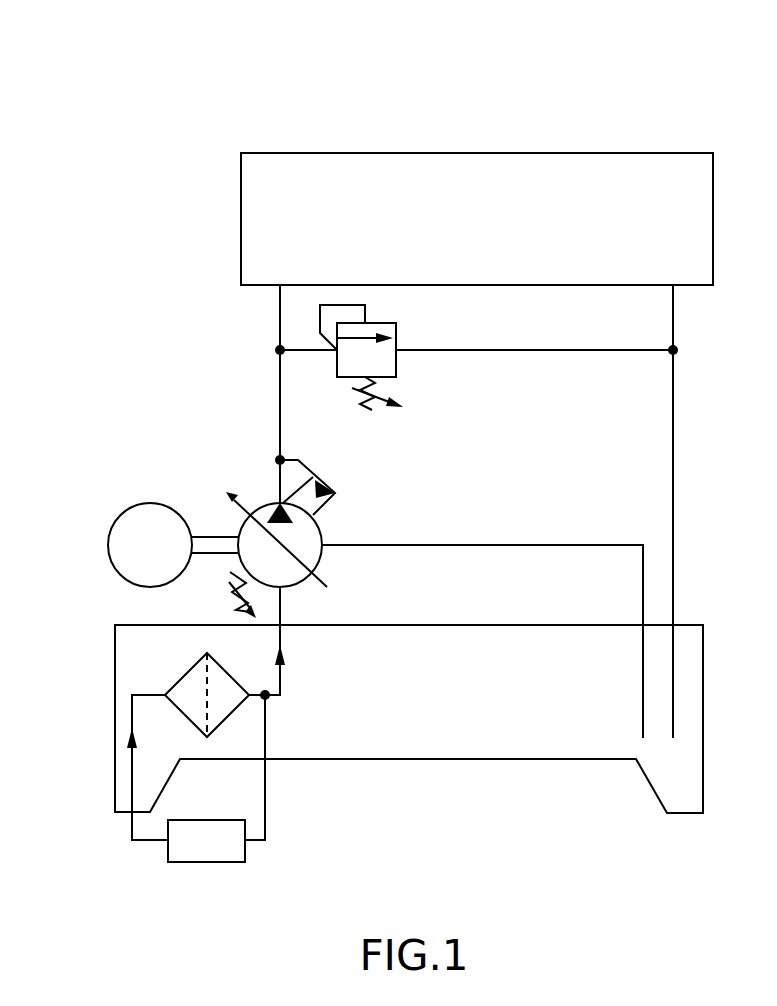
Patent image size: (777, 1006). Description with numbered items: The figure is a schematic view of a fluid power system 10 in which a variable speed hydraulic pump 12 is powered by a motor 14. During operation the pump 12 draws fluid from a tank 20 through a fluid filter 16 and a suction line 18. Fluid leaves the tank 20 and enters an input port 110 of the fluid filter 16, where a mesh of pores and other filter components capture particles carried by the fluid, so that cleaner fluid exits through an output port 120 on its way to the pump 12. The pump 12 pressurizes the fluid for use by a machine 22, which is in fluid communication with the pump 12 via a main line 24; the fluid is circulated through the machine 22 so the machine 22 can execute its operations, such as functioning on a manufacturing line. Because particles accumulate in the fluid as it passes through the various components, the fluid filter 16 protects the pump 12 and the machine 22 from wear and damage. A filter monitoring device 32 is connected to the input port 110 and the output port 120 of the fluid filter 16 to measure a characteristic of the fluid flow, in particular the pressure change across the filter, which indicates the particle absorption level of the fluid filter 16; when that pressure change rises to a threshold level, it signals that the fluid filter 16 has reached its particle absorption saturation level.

The fluid power system 10 is at (206, 101).
The variable speed hydraulic pump 12 is at (262, 503).
The motor 14 is at (112, 525).
The fluid filter 16 is at (188, 672).
The suction line 18 is at (282, 680).
The tank 20 is at (135, 625).
The machine 22 is at (680, 153).
The main line 24 is at (280, 410).
The filter monitoring device 32 is at (207, 862).
The input port 110 is at (132, 713).
The output port 120 is at (268, 697).